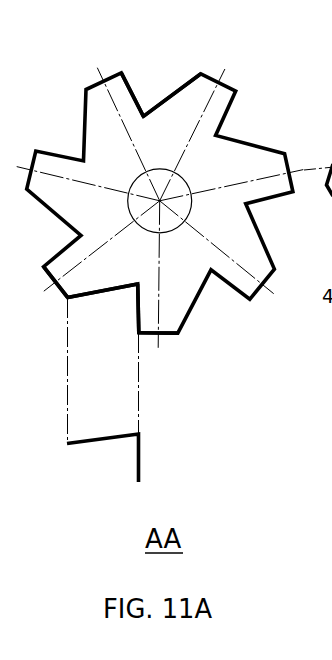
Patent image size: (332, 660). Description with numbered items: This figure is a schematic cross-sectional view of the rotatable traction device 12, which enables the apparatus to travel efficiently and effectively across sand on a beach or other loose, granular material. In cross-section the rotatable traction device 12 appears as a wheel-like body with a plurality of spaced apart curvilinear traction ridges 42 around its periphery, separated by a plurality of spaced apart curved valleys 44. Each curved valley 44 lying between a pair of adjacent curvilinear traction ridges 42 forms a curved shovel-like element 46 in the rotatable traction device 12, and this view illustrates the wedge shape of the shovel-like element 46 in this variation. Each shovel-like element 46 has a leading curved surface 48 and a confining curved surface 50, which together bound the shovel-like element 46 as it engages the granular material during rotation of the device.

The rotatable traction device 12 is at (106, 218).
The curvilinear traction ridge 42 is at (53, 277).
The curved valley 44 is at (184, 69).
The shovel-like element 46 is at (112, 460).
The leading curved surface 48 is at (136, 318).
The confining curved surface 50 is at (80, 298).